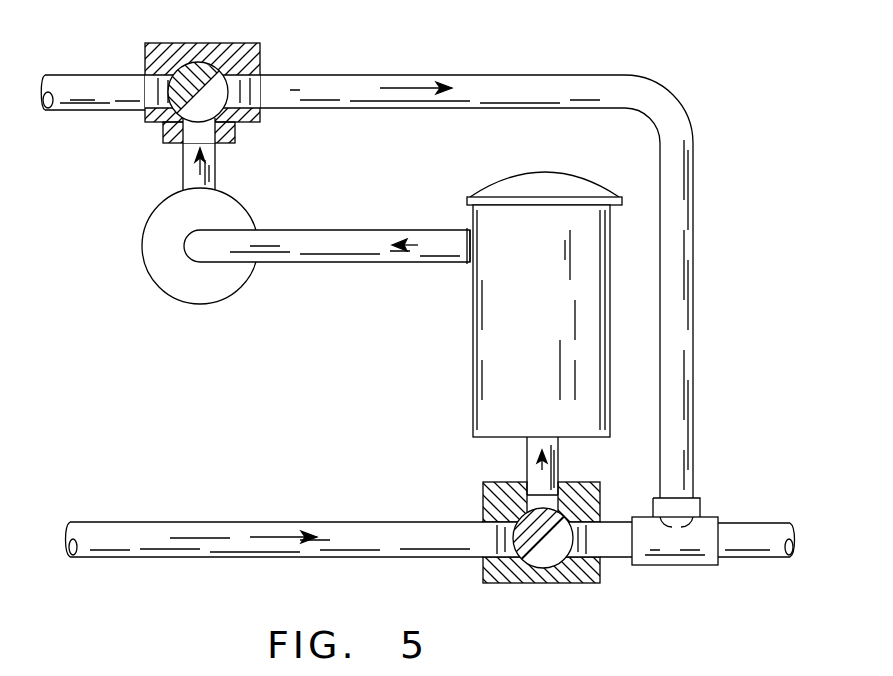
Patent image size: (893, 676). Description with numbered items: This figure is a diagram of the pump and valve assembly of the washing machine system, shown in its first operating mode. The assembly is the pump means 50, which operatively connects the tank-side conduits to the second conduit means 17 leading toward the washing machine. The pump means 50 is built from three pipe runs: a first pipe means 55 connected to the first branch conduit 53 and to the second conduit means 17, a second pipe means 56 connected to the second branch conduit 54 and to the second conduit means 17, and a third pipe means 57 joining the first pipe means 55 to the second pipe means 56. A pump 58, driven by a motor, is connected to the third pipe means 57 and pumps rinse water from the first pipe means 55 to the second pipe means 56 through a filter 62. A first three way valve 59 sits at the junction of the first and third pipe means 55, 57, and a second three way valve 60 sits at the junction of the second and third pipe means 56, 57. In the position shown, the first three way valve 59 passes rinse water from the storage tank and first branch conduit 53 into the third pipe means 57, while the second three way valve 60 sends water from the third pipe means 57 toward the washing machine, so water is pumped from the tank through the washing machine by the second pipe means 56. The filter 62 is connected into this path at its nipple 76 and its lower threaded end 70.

The second conduit means 17 is at (750, 508).
The pump means 50 is at (568, 62).
The first branch conduit 53 is at (163, 532).
The second branch conduit 54 is at (130, 74).
The first pipe means 55 is at (623, 572).
The second pipe means 56 is at (712, 137).
The third pipe means 57 is at (362, 274).
The pump 58 is at (207, 293).
The first three way valve 59 is at (495, 497).
The second three way valve 60 is at (255, 55).
The filter 62 is at (490, 413).
The lower threaded end 70 is at (527, 442).
The nipple 76 is at (468, 265).